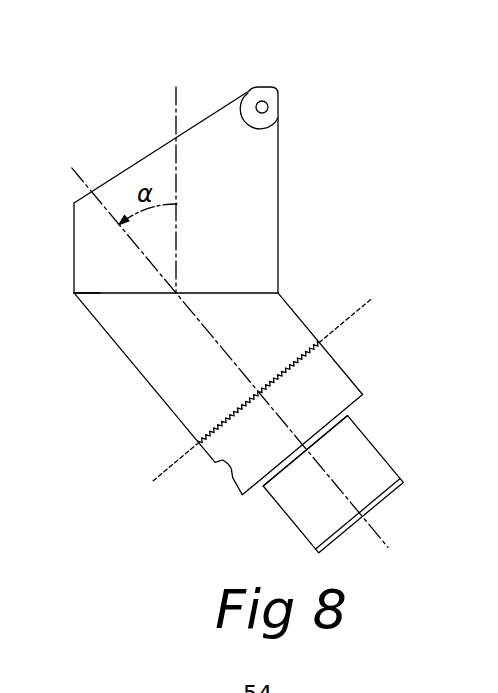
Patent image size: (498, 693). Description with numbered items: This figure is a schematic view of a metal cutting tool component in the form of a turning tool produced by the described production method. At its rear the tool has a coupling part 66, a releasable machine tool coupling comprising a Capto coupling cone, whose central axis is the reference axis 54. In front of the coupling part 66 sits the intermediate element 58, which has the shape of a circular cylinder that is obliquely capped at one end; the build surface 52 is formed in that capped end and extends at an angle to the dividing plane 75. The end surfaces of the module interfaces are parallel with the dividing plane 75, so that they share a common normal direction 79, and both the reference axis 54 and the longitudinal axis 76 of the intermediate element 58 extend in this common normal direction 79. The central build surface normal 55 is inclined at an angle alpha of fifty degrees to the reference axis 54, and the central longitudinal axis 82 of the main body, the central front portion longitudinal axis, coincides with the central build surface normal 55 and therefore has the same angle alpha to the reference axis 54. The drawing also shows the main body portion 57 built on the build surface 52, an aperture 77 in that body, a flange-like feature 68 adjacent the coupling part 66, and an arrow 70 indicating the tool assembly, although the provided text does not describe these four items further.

The build surface 52 is at (100, 293).
The reference axis 54 is at (215, 304).
The central build surface normal 55 is at (156, 157).
The mounting head 57 is at (238, 188).
The intermediate element 58 is at (183, 377).
The coupling part 66 is at (366, 463).
The flange 68 is at (344, 392).
The mounting bracket 70 is at (236, 279).
The dividing plane 75 is at (371, 303).
The longitudinal axis 76 is at (215, 316).
The aperture 77 is at (272, 109).
The common normal direction 79 is at (75, 180).
The central longitudinal axis of the main body 82 is at (175, 118).